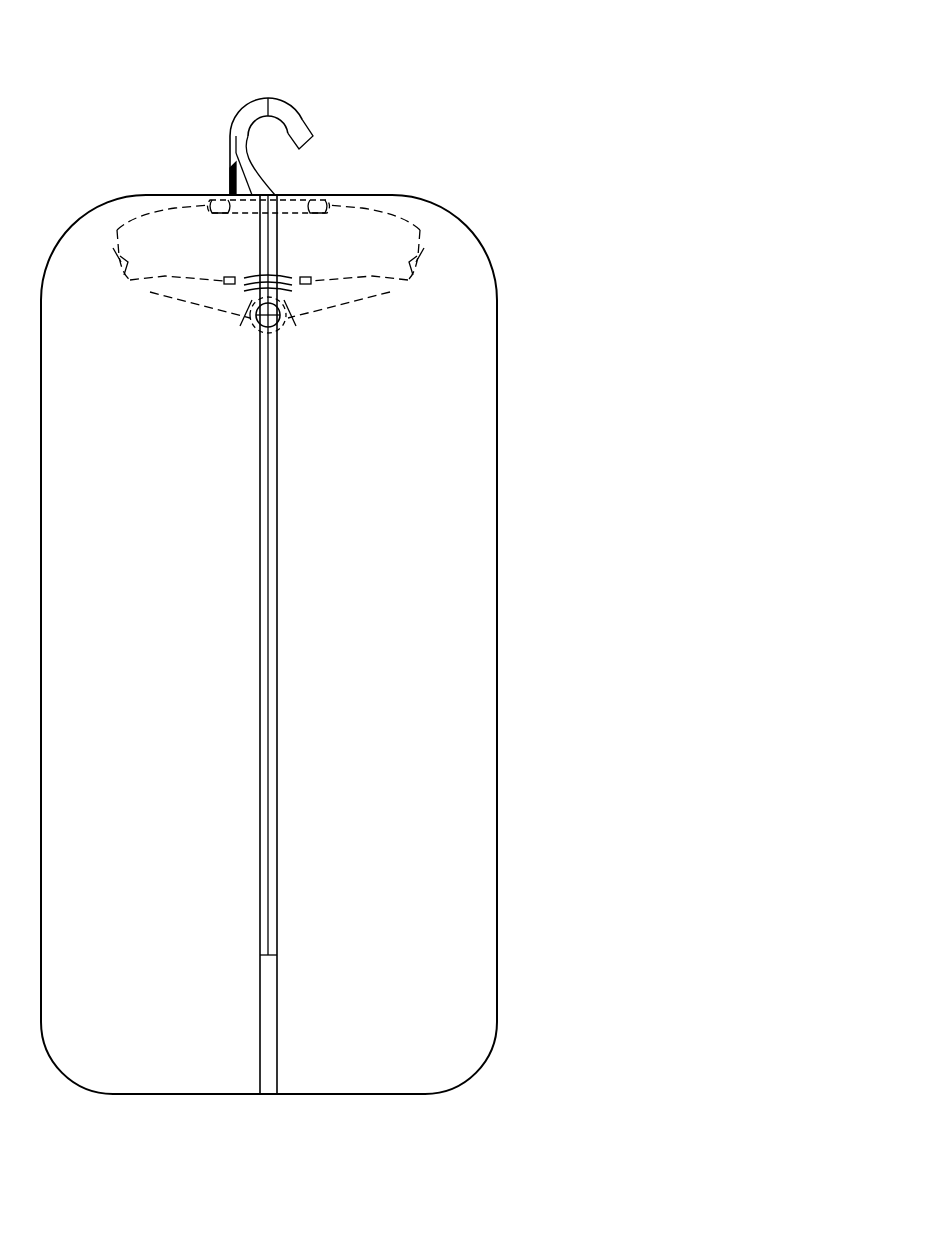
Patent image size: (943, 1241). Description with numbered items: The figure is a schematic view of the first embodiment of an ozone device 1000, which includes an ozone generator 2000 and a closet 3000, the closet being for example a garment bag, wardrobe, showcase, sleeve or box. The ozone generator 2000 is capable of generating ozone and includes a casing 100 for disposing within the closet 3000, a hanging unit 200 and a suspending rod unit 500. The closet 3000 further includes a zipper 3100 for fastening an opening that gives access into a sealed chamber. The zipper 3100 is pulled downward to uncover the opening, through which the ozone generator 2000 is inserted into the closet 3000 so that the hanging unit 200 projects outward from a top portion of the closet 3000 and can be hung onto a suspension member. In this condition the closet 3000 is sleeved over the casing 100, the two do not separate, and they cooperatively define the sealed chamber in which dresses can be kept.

The ozone device 1000 is at (557, 22).
The ozone generator 2000 is at (314, 99).
The hanging unit 200 is at (307, 122).
The casing 100 is at (185, 223).
The suspending rod unit 500 is at (290, 327).
The closet 3000 is at (487, 523).
The zipper 3100 is at (272, 645).